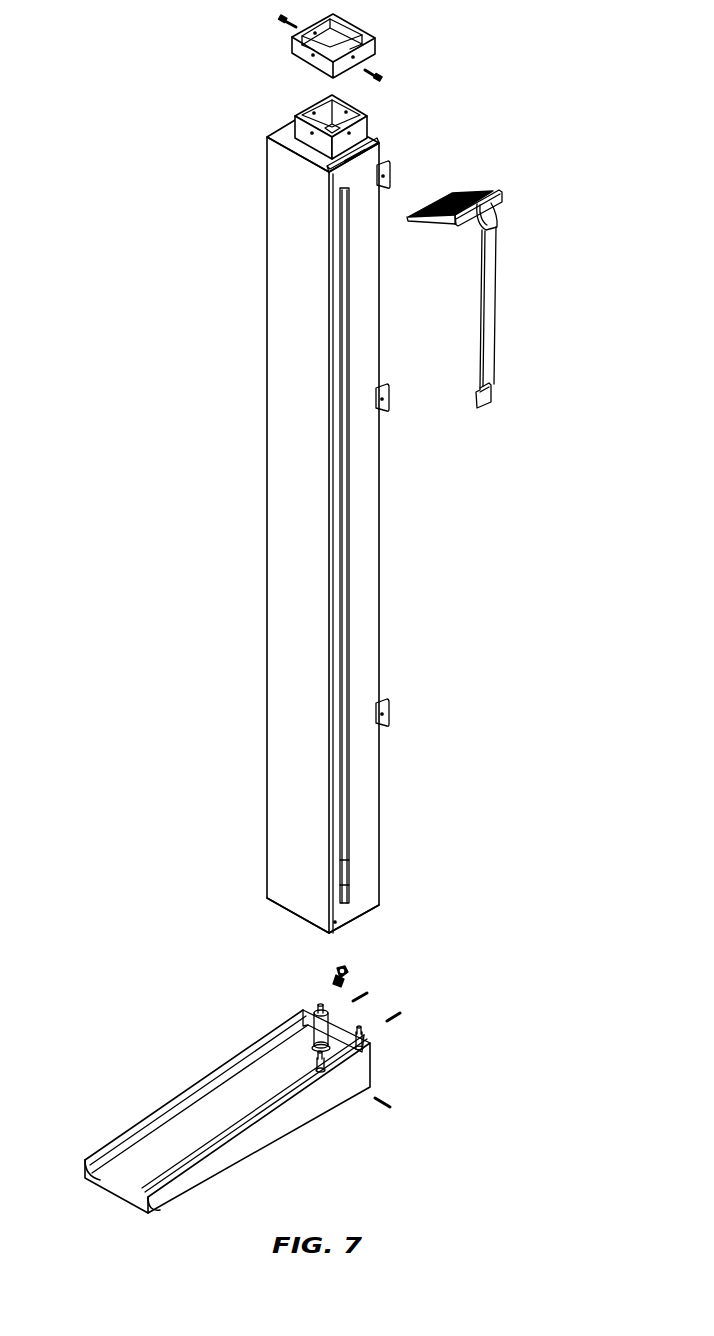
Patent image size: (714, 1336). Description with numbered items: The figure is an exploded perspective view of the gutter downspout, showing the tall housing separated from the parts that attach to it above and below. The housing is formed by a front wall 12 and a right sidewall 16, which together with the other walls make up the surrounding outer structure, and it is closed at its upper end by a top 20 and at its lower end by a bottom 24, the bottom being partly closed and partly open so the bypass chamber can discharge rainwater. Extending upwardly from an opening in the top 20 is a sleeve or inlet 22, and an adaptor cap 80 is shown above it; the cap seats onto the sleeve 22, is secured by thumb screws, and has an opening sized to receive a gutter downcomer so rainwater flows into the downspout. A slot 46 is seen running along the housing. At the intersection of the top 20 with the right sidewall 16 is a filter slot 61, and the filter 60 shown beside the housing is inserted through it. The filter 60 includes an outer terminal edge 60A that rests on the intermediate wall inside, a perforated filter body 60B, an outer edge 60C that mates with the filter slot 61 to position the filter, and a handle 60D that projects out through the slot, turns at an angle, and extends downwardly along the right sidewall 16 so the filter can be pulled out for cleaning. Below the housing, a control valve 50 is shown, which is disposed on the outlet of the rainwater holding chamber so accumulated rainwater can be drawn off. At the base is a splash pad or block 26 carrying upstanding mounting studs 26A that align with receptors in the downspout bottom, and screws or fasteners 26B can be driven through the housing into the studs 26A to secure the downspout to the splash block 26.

The front wall 12 is at (307, 757).
The right sidewall 16 is at (355, 618).
The top 20 is at (285, 132).
The sleeve or inlet 22 is at (298, 128).
The bottom 24 is at (283, 908).
The slot 46 is at (347, 672).
The filter slot 61 is at (355, 155).
The adaptor cap 80 is at (350, 40).
The filter 60 is at (503, 260).
The outer terminal edge 60A is at (434, 204).
The filter body 60B is at (462, 192).
The outer edge 60C is at (497, 201).
The handle 60D is at (488, 303).
The splash pad or block 26 is at (217, 1113).
The mounting studs 26A is at (315, 1010).
The screws or fasteners 26B is at (393, 1016).
The control valve 50 is at (335, 975).